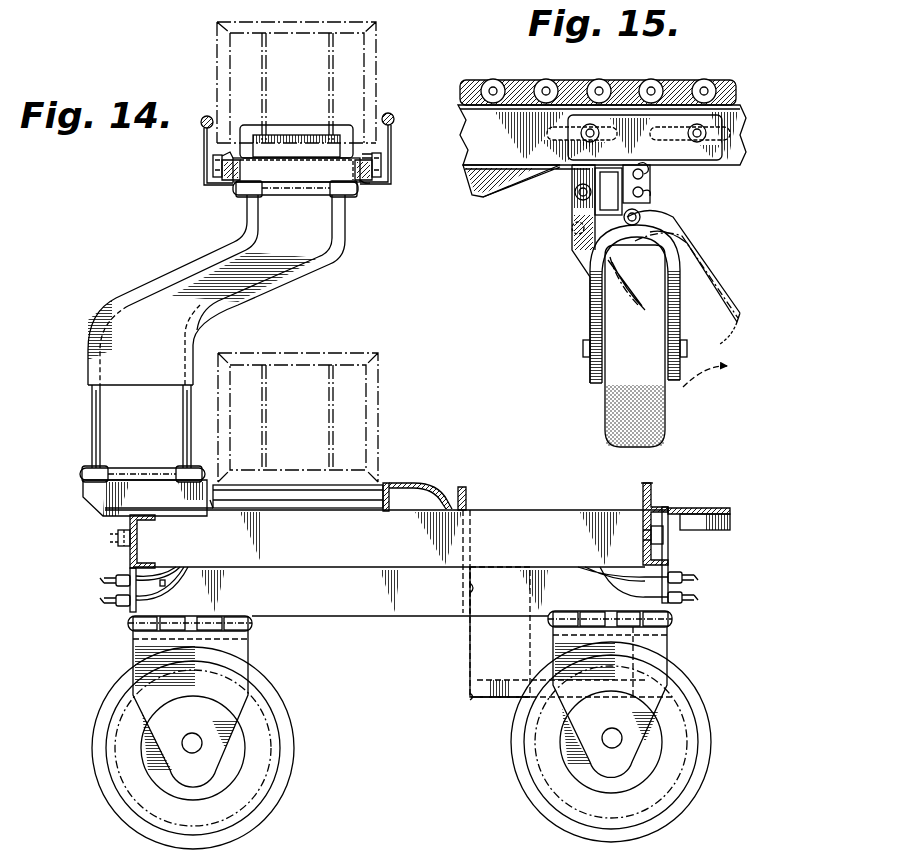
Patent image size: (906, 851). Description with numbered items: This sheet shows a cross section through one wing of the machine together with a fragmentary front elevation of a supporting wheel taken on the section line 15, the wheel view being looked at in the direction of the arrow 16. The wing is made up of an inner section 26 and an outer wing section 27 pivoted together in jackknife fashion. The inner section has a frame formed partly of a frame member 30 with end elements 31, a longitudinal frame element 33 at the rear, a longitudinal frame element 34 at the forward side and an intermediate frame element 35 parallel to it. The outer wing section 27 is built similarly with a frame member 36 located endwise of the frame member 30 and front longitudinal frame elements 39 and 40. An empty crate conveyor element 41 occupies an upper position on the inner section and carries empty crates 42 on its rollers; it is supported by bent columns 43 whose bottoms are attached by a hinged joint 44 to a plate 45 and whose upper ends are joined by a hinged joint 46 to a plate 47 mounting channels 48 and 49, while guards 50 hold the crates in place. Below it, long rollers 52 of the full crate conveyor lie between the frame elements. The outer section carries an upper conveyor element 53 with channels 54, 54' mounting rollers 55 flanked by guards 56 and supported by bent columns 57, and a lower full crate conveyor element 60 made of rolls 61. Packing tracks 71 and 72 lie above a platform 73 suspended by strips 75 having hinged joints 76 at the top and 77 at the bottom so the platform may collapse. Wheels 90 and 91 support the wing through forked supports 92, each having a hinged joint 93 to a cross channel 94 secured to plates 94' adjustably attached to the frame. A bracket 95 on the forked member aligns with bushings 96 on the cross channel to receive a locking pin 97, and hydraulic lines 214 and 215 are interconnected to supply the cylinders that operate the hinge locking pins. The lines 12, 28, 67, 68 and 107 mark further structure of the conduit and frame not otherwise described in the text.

In FIG. 14, the conduit / duct 12 is at (76, 350).
In FIG. 15, the conduit / duct 12 is at (493, 65).
In FIG. 14, the section line 15 is at (88, 525).
In FIG. 15, the view direction arrow 16 is at (556, 330).
In FIG. 14, the inner section 26 is at (50, 846).
In FIG. 14, the outer wing section 27 is at (376, 620).
In FIG. 15, the outer wing section 27 is at (494, 205).
In FIG. 14, the end plate 28 is at (672, 568).
In FIG. 14, the frame member 30 is at (432, 490).
In FIG. 14, the end elements 31 is at (580, 520).
In FIG. 14, the longitudinal frame element 33 is at (660, 497).
In FIG. 14, the longitudinal frame element 34 is at (150, 508).
In FIG. 14, the intermediate frame element 35 is at (200, 508).
In FIG. 14, the frame member 36 is at (412, 483).
In FIG. 14, the longitudinal frame element 39 is at (130, 560).
In FIG. 15, the longitudinal frame element 39 is at (463, 150).
In FIG. 14, the longitudinal frame element 40 is at (213, 502).
In FIG. 15, the longitudinal frame element 40 is at (634, 80).
In FIG. 14, the empty crate conveyor element 41 is at (346, 120).
In FIG. 14, the empty crates 42 is at (376, 38).
In FIG. 14, the bent columns 43 is at (212, 246).
In FIG. 14, the hinged joint 44 is at (80, 475).
In FIG. 14, the plate 45 is at (88, 492).
In FIG. 14, the hinged joint 46 is at (240, 196).
In FIG. 14, the plate 47 is at (222, 177).
In FIG. 14, the channel 48 is at (236, 186).
In FIG. 14, the channel 49 is at (384, 152).
In FIG. 14, the guards 50 is at (206, 116).
In FIG. 14, the long rollers 52 is at (298, 498).
In FIG. 15, the long rollers 52 is at (711, 80).
In FIG. 14, the upper conveyor element 53 is at (148, 194).
In FIG. 14, the channel 54 is at (238, 129).
In FIG. 14, the channel 54' is at (379, 194).
In FIG. 14, the rollers 55 is at (213, 158).
In FIG. 14, the guards 56 is at (203, 126).
In FIG. 14, the bent columns 57 is at (142, 280).
In FIG. 14, the lower full crate conveyor element 60 is at (388, 480).
In FIG. 15, the lower full crate conveyor element 60 is at (681, 78).
In FIG. 14, the rolls 61 is at (348, 503).
In FIG. 15, the rolls 61 is at (546, 80).
In FIG. 14, the end plate 67 is at (704, 508).
In FIG. 14, the end fitting 68 is at (730, 508).
In FIG. 14, the packing track 71 is at (466, 487).
In FIG. 14, the packing track 72 is at (651, 486).
In FIG. 14, the platform 73 is at (487, 700).
In FIG. 14, the strips 75 is at (470, 660).
In FIG. 14, the hinged joint 76 is at (466, 588).
In FIG. 14, the hinged joint 77 is at (468, 688).
In FIG. 14, the wheel 90 is at (290, 723).
In FIG. 14, the wheel 91 is at (511, 732).
In FIG. 14, the forked supports 92 is at (236, 685).
In FIG. 15, the forked supports 92 is at (592, 281).
In FIG. 14, the hinged joint 93 is at (252, 624).
In FIG. 15, the hinged joint 93 is at (646, 216).
In FIG. 14, the cross channel 94 is at (418, 621).
In FIG. 15, the cross channel 94 is at (637, 191).
In FIG. 14, the plates 94' is at (400, 576).
In FIG. 15, the plates 94' is at (638, 137).
In FIG. 15, the bracket 95 is at (574, 258).
In FIG. 15, the bushings 96 is at (575, 191).
In FIG. 15, the pin 97 is at (578, 200).
In FIG. 15, the edge 107 is at (516, 181).
In FIG. 14, the hydraulic line 214 is at (168, 570).
In FIG. 15, the hydraulic line 214 is at (638, 168).
In FIG. 14, the hydraulic line 215 is at (113, 607).
In FIG. 15, the hydraulic line 215 is at (651, 193).